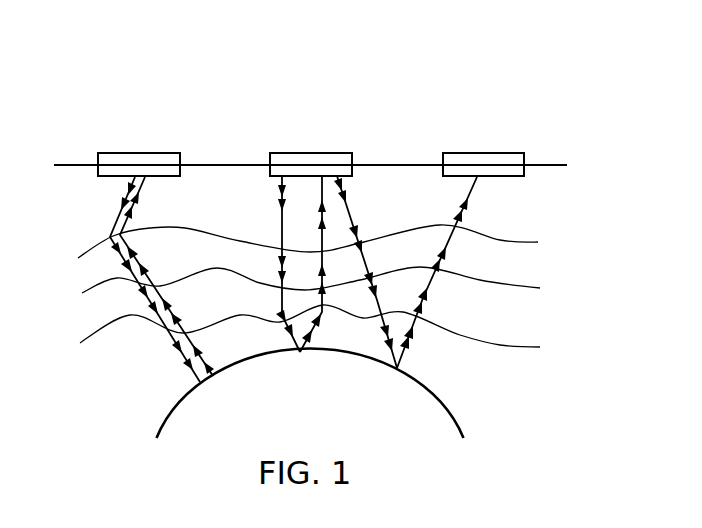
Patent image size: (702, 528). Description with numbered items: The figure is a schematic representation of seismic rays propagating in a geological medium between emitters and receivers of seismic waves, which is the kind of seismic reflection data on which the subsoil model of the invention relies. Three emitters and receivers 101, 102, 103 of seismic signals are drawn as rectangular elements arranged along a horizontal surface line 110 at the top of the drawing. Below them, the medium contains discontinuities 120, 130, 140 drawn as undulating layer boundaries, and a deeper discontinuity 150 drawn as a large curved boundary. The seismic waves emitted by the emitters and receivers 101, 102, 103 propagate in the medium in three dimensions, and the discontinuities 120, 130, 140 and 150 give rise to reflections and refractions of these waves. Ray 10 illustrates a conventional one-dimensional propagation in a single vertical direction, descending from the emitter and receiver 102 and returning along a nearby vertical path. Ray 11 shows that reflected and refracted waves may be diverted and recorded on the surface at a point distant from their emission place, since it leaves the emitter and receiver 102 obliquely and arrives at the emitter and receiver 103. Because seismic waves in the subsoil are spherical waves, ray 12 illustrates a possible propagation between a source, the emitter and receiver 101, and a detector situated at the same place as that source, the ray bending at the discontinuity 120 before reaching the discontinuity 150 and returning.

The ray 10 is at (282, 186).
The ray 11 is at (478, 177).
The ray 12 is at (112, 233).
The emitter and receiver 101 is at (118, 153).
The emitter and receiver 102 is at (330, 153).
The emitter and receiver 103 is at (512, 153).
The transducer array line 110 is at (405, 162).
The discontinuity 120 is at (527, 233).
The discontinuity 130 is at (528, 283).
The discontinuity 140 is at (528, 345).
The discontinuity 150 is at (175, 404).